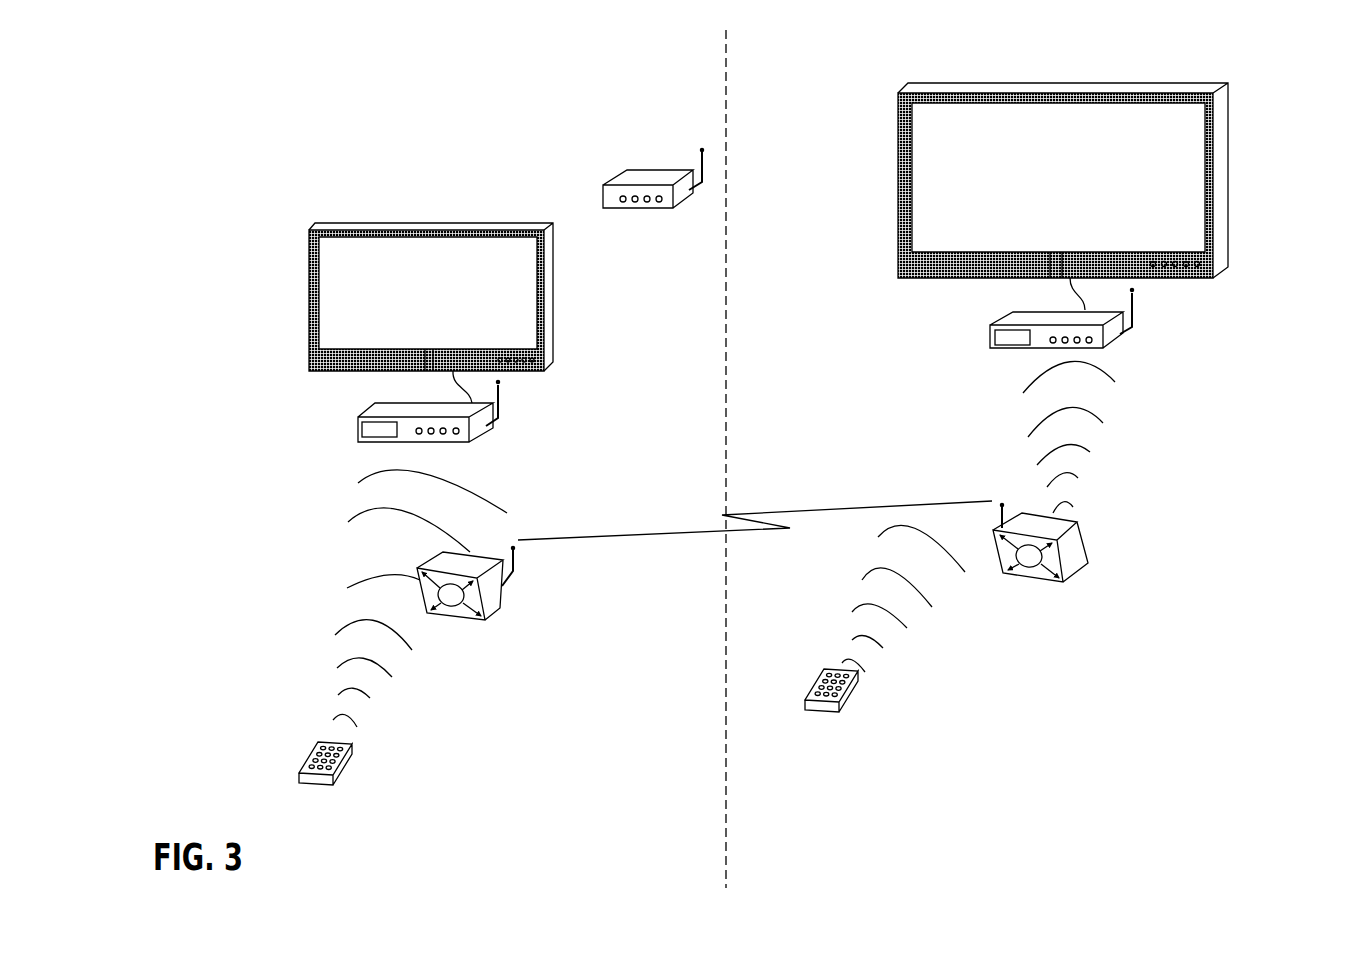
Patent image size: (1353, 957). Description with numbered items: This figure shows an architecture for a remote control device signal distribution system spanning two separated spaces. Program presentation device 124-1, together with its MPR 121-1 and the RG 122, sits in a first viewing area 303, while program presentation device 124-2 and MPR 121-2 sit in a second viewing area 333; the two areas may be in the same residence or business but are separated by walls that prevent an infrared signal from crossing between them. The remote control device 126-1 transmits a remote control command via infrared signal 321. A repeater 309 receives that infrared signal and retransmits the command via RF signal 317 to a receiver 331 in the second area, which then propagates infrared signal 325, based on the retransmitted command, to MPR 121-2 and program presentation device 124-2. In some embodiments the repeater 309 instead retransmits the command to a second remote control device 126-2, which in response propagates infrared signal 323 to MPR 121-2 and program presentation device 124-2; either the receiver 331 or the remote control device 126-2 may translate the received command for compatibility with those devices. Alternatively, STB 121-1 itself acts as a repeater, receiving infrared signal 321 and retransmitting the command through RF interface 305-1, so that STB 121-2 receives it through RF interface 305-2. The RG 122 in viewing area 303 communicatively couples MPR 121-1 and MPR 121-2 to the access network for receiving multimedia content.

The first viewing area 303 is at (705, 63).
The second viewing area 333 is at (767, 63).
The RG 122 is at (661, 170).
The program presentation device 124-1 is at (553, 330).
The program presentation device 124-2 is at (1228, 173).
The MPR 121-1 is at (357, 430).
The MPR 121-2 is at (990, 337).
The RF interface 305-1 is at (505, 393).
The RF interface 305-2 is at (1138, 303).
The repeater 309 is at (500, 612).
The receiver 331 is at (1070, 575).
The RF signal 317 is at (633, 532).
The infrared signal 321 is at (372, 695).
The infrared signal 323 is at (918, 630).
The infrared signal 325 is at (1095, 455).
The remote control device 126-1 is at (356, 747).
The remote control device 126-2 is at (862, 676).